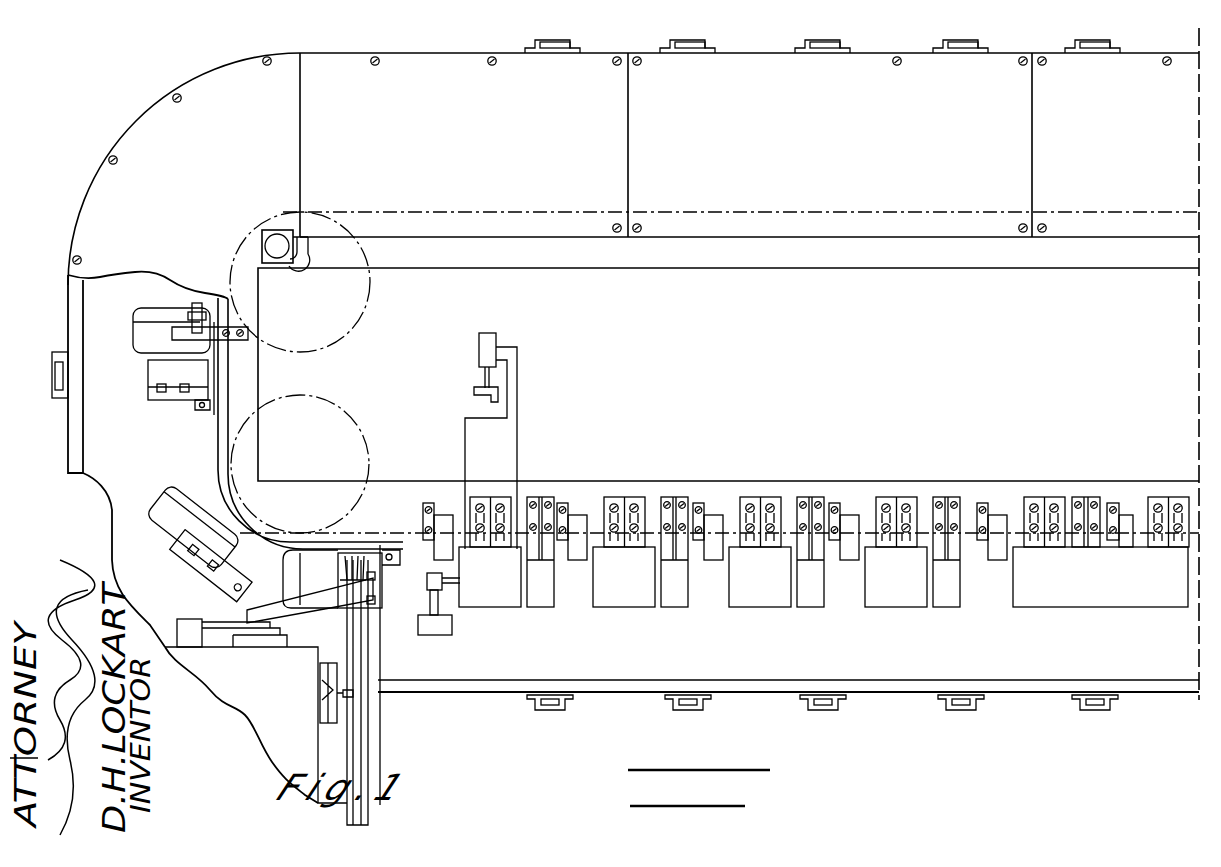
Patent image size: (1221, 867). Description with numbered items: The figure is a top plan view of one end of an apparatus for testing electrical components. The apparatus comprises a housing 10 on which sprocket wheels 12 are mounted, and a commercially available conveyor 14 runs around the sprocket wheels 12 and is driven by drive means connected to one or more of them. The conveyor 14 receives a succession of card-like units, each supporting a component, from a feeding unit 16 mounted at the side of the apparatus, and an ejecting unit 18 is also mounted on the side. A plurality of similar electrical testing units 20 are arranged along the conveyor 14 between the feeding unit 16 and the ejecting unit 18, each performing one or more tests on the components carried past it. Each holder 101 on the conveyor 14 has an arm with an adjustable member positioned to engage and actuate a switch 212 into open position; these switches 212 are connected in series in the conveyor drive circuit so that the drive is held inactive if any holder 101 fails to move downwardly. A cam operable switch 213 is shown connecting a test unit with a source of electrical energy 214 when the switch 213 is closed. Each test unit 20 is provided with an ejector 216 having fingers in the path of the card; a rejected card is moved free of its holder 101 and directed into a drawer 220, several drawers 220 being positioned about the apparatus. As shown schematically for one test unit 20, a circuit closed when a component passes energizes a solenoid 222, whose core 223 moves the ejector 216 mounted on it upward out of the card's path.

The housing 10 is at (97, 437).
The sprocket wheels 12 is at (312, 396).
The conveyor 14 is at (238, 420).
The feeding unit 16 is at (388, 721).
The ejecting unit 18 is at (137, 353).
The electrical testing unit 20 is at (502, 608).
The holder 101 is at (146, 381).
The switch 212 is at (448, 513).
The cam operable switch 213 is at (427, 581).
The source of electrical energy 214 is at (445, 635).
The ejector 216 is at (478, 395).
The drawer 220 is at (553, 711).
The solenoid 222 is at (490, 333).
The core 223 is at (485, 378).